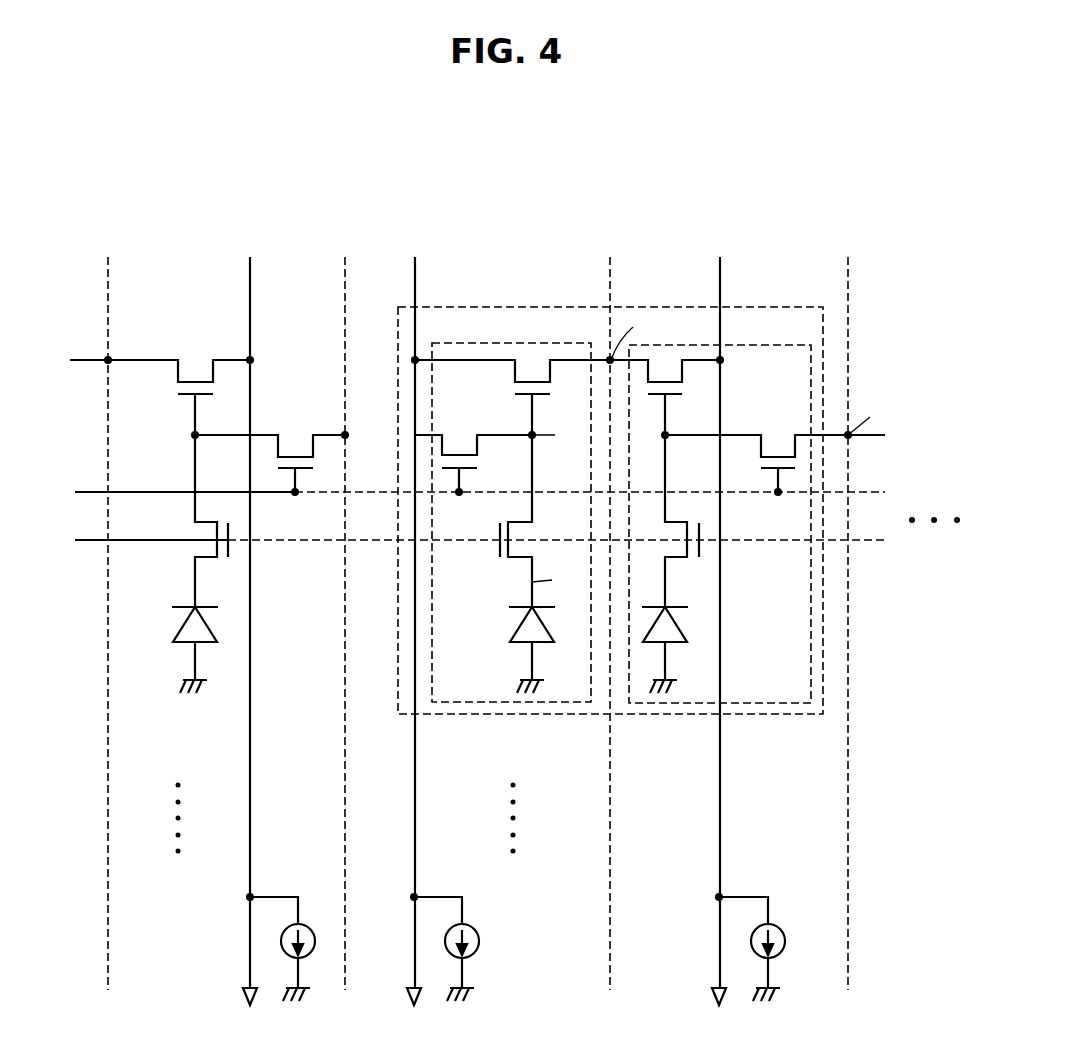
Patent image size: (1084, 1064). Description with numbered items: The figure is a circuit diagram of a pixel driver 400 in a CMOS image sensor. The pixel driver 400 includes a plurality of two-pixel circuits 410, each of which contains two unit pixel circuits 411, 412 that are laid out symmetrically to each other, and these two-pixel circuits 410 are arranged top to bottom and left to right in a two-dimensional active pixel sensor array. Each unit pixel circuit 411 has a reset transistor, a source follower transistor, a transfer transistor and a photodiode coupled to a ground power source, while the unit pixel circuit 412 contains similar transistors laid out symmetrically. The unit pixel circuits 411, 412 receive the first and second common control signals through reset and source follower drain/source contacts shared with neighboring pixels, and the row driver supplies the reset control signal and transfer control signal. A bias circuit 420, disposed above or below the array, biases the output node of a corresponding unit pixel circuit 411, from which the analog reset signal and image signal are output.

The pixel driver 400 is at (108, 360).
The 2-pixel circuit 410 is at (632, 307).
The unit pixel circuit 411 is at (528, 342).
The unit pixel circuit 412 is at (745, 345).
The bias circuit 420 is at (479, 941).